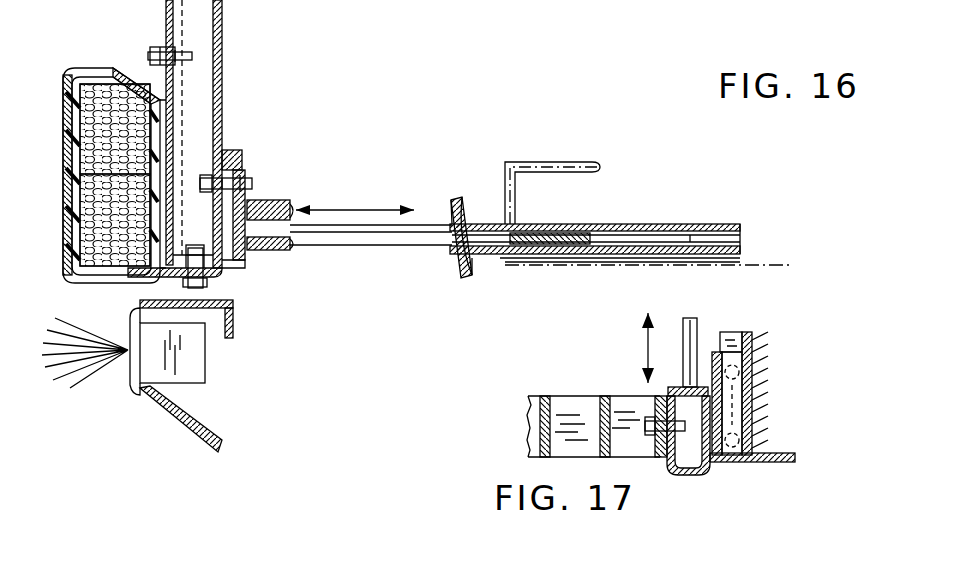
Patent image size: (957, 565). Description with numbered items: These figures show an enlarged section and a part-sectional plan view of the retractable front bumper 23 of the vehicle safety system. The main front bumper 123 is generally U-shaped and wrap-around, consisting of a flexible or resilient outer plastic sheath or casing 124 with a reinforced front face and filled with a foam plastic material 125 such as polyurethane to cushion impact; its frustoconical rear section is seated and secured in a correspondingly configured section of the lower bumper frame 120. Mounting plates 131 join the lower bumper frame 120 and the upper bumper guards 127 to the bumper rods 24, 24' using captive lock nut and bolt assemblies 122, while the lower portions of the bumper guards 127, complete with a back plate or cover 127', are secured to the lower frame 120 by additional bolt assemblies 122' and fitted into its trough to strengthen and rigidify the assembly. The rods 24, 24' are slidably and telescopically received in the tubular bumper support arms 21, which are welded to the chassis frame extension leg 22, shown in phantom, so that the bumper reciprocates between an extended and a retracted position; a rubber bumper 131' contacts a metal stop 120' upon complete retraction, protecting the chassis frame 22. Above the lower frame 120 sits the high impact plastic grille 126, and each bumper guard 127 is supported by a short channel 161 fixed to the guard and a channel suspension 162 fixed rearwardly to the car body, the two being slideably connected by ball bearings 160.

In FIG. 16, the main front bumper 123 is at (58, 103).
In FIG. 16, the outer plastic sheath or casing 124 is at (76, 150).
In FIG. 16, the foam plastic material 125 is at (76, 199).
In FIG. 16, the bolt assemblies 122' is at (227, 164).
In FIG. 16, the back plate or cover 127' is at (206, 138).
In FIG. 16, the retractable front bumper 23 is at (268, 118).
In FIG. 17, the retractable front bumper 23 is at (612, 380).
In FIG. 16, the mounting plates 131 is at (276, 190).
In FIG. 16, the captive lock nut and bolt assemblies 122 is at (254, 167).
In FIG. 16, the rubber bumper 131' is at (349, 209).
In FIG. 16, the bumper rods 24 is at (445, 228).
In FIG. 16, the stop 120' is at (472, 214).
In FIG. 16, the chassis frame extension leg 22 is at (577, 160).
In FIG. 16, the tubular bumper support arms 21 is at (662, 226).
In FIG. 16, the lower bumper frame 120 is at (242, 269).
In FIG. 17, the grille 126 is at (527, 432).
In FIG. 17, the bumper guards 127 is at (710, 448).
In FIG. 17, the bumper rods 24' is at (729, 341).
In FIG. 17, the short channel 161 is at (712, 372).
In FIG. 17, the ball bearings 160 is at (760, 392).
In FIG. 17, the channel suspension 162 is at (750, 333).